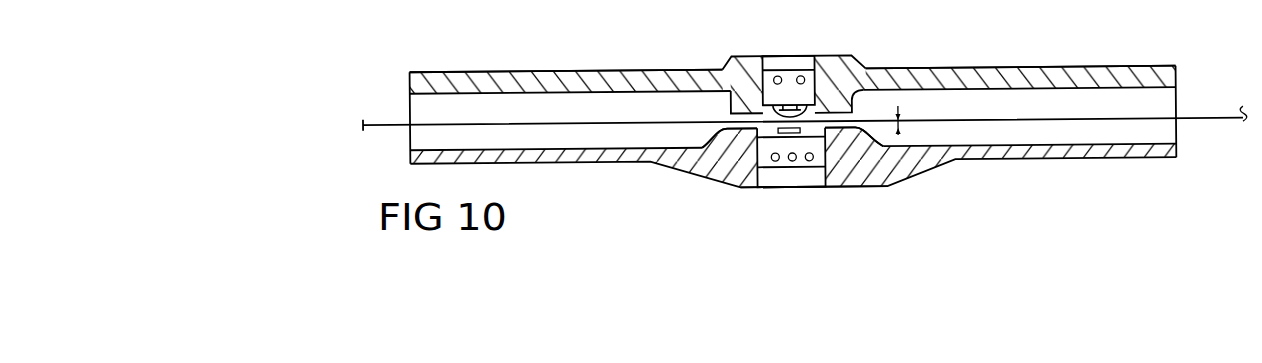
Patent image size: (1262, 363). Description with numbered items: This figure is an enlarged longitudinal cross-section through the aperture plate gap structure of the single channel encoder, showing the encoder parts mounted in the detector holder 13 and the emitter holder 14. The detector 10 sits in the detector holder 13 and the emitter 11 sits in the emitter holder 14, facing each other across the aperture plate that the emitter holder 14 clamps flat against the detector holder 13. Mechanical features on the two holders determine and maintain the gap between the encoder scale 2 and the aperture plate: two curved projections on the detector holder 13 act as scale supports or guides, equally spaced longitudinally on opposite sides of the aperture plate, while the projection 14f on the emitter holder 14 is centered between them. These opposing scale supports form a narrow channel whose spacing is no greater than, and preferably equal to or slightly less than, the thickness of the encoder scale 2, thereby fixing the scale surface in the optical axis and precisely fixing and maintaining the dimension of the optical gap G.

The encoder scale 2 is at (493, 123).
The detector 10 is at (813, 163).
The emitter 11 is at (814, 82).
The detector holder 13 is at (806, 166).
The emitter holder 14 is at (803, 91).
The projection 14f is at (811, 111).
The optical gap G is at (910, 127).